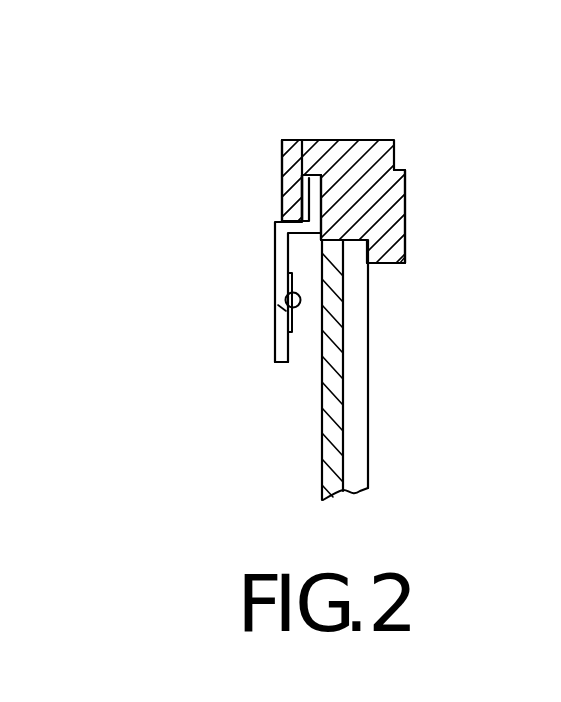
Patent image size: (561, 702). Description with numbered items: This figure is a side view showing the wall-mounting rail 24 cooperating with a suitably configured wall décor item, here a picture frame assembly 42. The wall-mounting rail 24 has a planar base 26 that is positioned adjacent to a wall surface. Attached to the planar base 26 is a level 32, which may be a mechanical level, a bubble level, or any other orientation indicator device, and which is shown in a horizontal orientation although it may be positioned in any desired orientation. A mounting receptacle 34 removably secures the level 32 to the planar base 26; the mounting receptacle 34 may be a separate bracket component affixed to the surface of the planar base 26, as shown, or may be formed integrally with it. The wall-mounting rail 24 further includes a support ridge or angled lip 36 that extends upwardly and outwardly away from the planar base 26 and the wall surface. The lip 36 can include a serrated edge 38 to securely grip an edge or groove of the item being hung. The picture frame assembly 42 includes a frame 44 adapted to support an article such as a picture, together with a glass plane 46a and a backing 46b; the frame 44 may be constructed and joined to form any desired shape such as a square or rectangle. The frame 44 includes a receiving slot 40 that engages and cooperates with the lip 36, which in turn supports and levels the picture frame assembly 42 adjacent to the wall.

The wall-mounting rail 24 is at (240, 346).
The planar base 26 is at (275, 263).
The level 32 is at (298, 300).
The mounting receptacle 34 is at (292, 316).
The angled lip 36 is at (308, 210).
The serrated edge 38 is at (322, 175).
The receiving slot 40 is at (310, 210).
The picture frame assembly 42 is at (430, 90).
The frame 44 is at (406, 192).
The glass plane 46a is at (370, 347).
The backing 46b is at (347, 397).